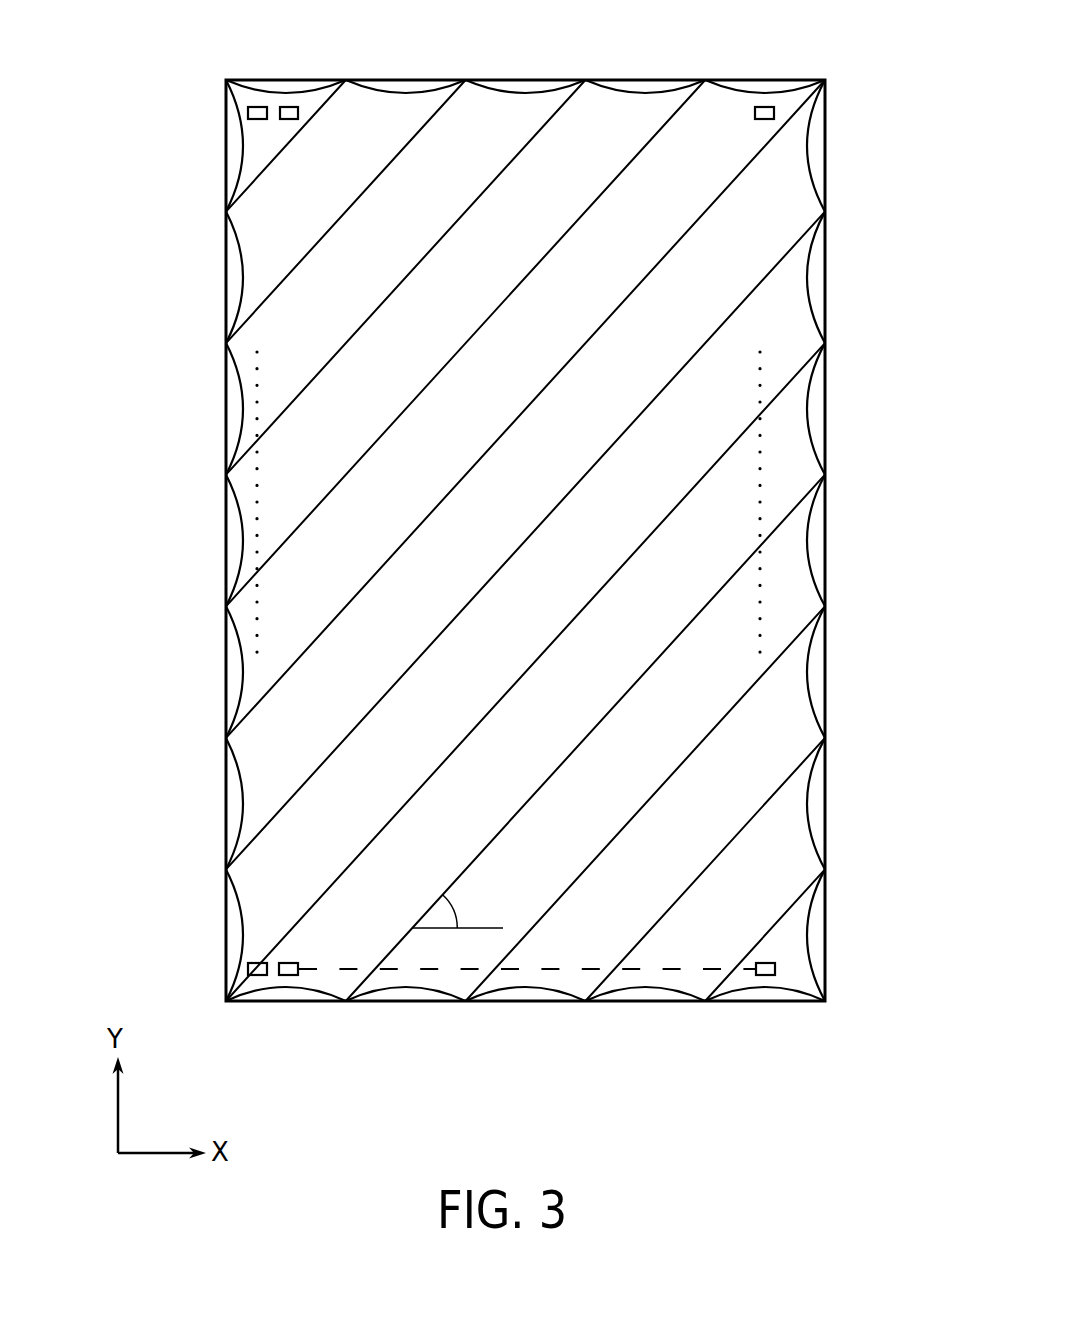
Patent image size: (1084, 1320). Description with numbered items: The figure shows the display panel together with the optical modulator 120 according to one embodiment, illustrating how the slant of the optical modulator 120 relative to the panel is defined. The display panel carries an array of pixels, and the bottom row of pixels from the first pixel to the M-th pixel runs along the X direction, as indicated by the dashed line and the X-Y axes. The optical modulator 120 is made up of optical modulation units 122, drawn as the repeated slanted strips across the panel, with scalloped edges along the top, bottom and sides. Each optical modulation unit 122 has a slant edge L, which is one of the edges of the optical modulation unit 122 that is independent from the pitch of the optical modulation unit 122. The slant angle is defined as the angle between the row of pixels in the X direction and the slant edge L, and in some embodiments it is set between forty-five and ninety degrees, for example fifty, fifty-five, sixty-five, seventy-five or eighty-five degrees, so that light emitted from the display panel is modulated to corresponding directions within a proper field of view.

The optical modulator 120 is at (827, 152).
The optical modulation unit 122 is at (371, 104).
The slant edge L is at (459, 876).